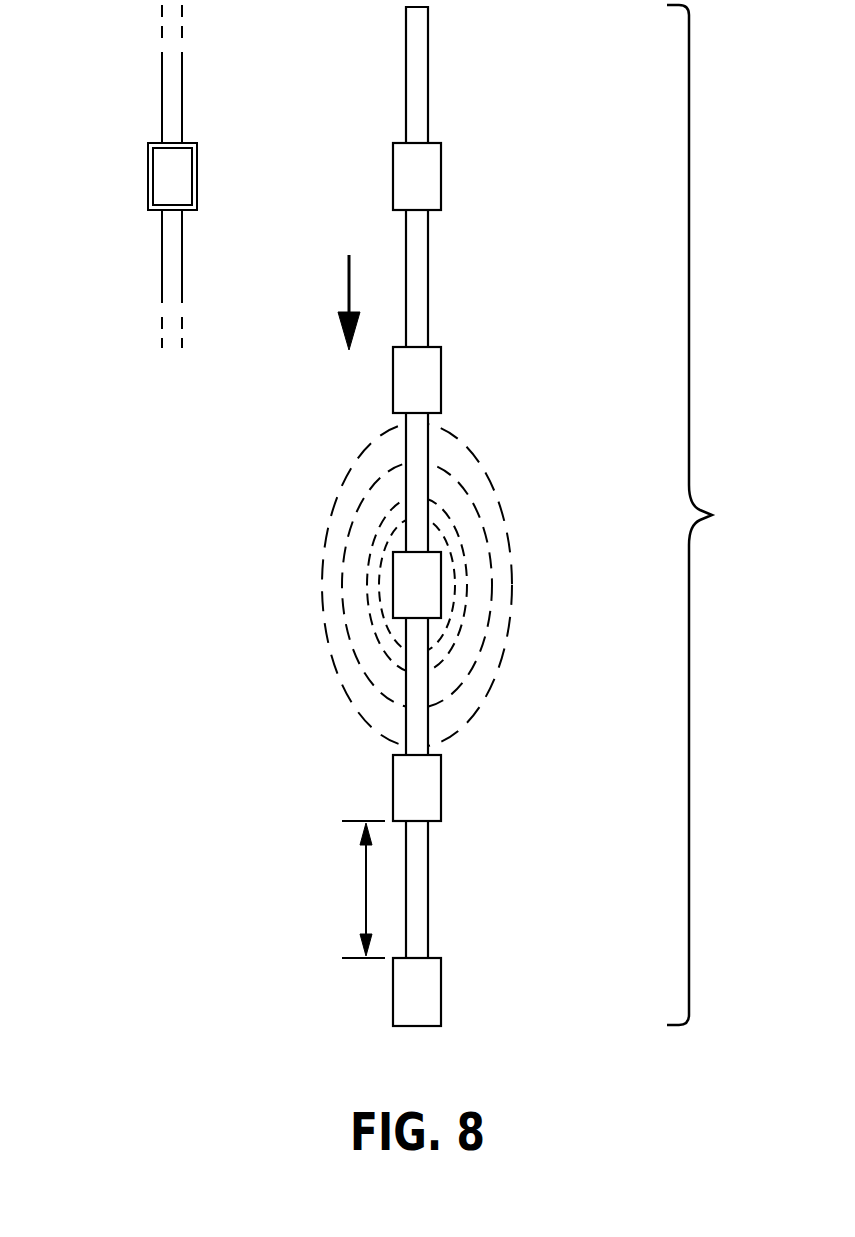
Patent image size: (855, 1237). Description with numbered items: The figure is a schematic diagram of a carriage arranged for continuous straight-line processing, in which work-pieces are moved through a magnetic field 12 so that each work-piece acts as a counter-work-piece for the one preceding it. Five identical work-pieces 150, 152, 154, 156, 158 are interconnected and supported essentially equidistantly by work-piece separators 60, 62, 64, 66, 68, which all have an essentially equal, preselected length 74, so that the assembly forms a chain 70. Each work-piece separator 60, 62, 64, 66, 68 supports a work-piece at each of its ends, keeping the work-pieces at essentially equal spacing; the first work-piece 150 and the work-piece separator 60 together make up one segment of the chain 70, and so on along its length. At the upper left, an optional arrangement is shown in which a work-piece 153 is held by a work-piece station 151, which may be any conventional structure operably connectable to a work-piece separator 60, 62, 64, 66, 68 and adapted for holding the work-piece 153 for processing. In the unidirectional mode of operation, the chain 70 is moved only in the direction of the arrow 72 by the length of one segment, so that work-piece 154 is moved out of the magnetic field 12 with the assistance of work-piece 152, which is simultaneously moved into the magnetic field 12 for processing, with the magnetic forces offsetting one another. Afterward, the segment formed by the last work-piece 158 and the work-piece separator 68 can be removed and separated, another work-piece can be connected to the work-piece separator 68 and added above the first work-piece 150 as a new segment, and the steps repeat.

The magnetic field 12 is at (510, 625).
The work-piece separator 60 is at (428, 71).
The work-piece separator 62 is at (428, 300).
The work-piece separator 64 is at (428, 508).
The work-piece separator 66 is at (428, 722).
The work-piece separator 68 is at (428, 883).
The chain 70 is at (701, 508).
The arrow 72 is at (345, 290).
The preselected length 74 is at (364, 890).
The work-piece 150 is at (441, 173).
The work-piece station 151 is at (148, 143).
The work-piece 152 is at (441, 376).
The work-piece 153 is at (153, 197).
The work-piece 154 is at (441, 575).
The work-piece 156 is at (441, 787).
The work-piece 158 is at (441, 990).